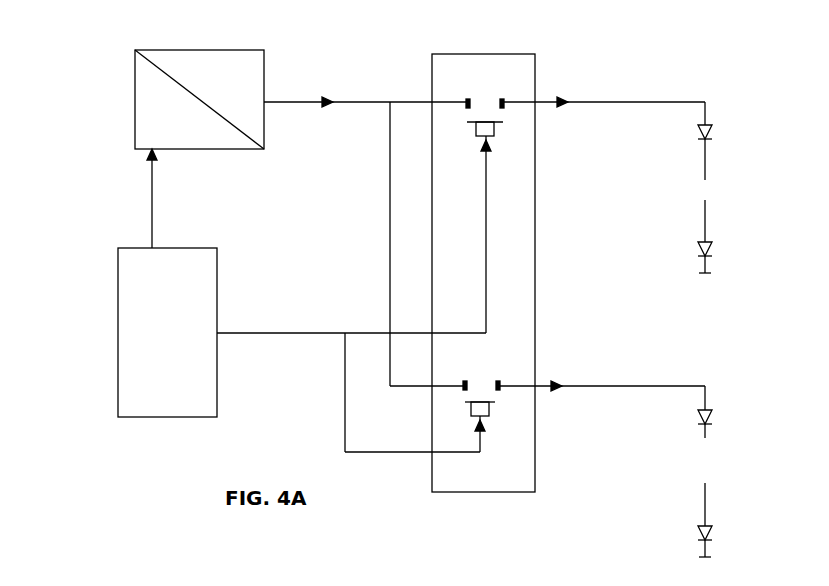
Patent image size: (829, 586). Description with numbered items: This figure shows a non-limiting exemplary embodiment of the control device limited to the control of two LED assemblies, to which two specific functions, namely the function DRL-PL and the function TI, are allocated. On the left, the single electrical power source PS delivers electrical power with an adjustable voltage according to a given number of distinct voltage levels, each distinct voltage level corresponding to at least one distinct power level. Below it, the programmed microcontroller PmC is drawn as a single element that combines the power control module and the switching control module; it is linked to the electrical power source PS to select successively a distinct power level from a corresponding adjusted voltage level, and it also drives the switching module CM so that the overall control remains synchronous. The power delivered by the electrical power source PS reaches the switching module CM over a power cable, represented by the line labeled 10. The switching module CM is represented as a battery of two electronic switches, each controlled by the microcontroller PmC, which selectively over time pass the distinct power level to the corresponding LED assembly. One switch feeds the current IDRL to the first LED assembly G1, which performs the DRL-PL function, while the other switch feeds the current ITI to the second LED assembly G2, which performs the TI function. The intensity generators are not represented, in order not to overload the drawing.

The electrical power source PS is at (208, 50).
The programmed microcontroller PmC is at (118, 297).
The supply line 10 is at (366, 88).
The switching module CM is at (503, 53).
The daytime running light current IDRL is at (604, 91).
The LED assembly G1 is at (734, 141).
The DRL-PL function DRL-PL is at (743, 225).
The turn indicator current ITI is at (602, 374).
The LED assembly G2 is at (727, 412).
The TI function TI is at (723, 509).